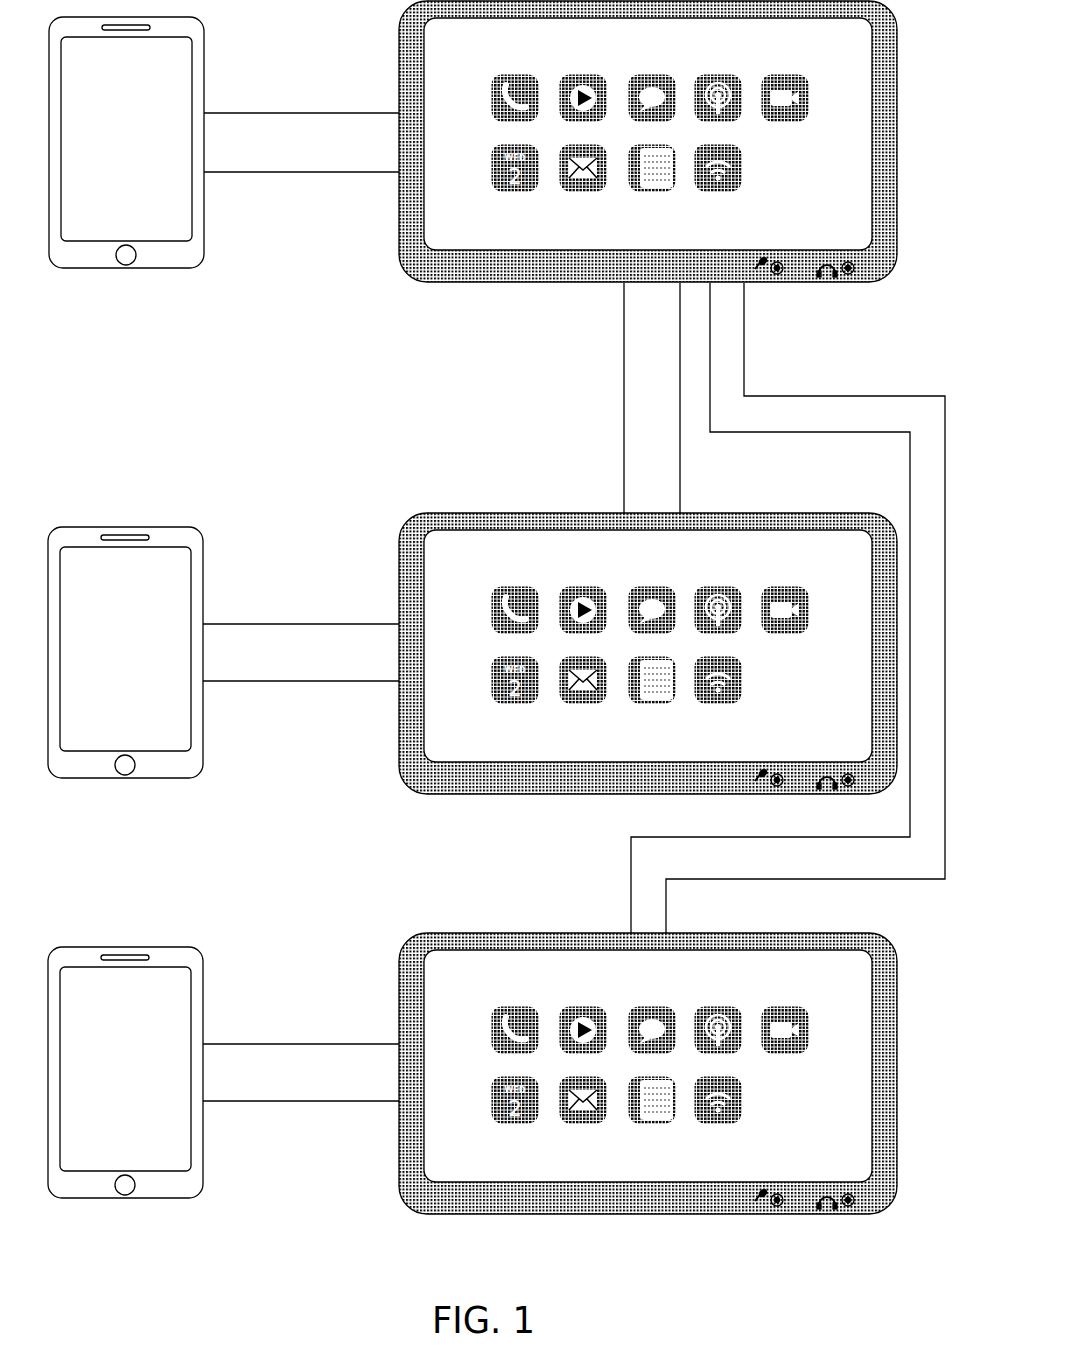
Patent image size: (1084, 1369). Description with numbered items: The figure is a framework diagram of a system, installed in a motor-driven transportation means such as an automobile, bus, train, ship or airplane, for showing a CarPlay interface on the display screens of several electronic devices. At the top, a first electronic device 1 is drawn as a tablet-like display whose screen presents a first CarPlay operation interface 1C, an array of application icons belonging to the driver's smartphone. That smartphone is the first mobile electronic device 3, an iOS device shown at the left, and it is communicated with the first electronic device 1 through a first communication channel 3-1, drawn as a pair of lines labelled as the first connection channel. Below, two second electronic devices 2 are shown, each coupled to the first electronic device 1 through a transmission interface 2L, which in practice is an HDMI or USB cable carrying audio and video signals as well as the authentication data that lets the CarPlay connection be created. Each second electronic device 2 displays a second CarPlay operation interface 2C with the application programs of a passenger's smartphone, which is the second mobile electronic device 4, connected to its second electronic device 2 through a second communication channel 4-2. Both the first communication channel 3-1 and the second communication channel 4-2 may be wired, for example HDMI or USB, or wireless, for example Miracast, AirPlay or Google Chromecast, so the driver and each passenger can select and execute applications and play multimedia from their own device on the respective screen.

The first electronic device 1 is at (427, 296).
The first CarPlay operation interface 1C is at (493, 153).
The second electronic device 2 is at (418, 498).
The second CarPlay operation interface 2C is at (585, 586).
The transmission interface 2L is at (622, 347).
The first mobile electronic device 3 is at (183, 281).
The first communication channel 3-1 is at (278, 172).
The second mobile electronic device 4 is at (188, 512).
The second communication channel 4-2 is at (343, 681).